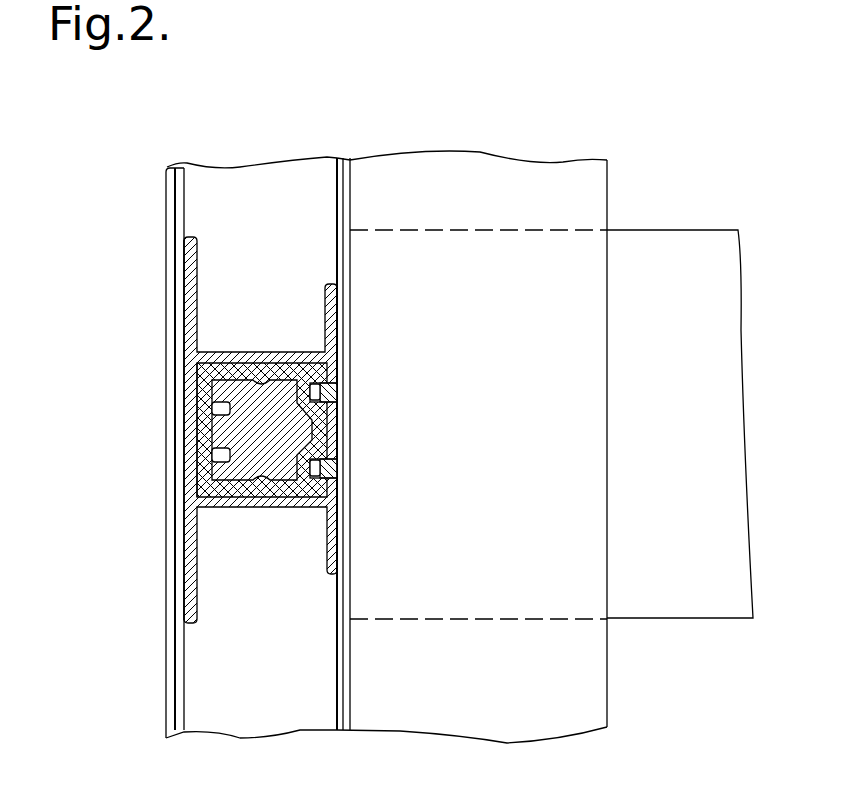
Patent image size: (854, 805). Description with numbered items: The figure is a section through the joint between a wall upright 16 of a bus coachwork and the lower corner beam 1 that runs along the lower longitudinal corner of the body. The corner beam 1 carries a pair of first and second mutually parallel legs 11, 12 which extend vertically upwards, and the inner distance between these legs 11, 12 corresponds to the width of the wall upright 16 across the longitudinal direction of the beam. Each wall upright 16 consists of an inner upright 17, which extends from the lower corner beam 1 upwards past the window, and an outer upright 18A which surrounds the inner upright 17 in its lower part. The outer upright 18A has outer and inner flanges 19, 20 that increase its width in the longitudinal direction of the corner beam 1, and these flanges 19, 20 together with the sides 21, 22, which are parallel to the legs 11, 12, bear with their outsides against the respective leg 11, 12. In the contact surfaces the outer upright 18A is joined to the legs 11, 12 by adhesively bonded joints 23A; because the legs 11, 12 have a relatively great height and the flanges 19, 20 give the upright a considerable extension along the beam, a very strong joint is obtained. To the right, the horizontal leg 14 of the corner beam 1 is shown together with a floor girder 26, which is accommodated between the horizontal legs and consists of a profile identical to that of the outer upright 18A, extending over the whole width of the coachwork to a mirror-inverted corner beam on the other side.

The lower corner beam 1 is at (369, 150).
The first leg 11 is at (166, 183).
The second leg 12 is at (350, 207).
The fourth leg 14 is at (583, 665).
The wall upright 16 is at (264, 425).
The inner upright 17 is at (244, 490).
The outer upright 18A is at (267, 482).
The outer flange 19 is at (193, 257).
The inner flange 20 is at (326, 294).
The side 21 is at (192, 430).
The side 22 is at (327, 388).
The adhesively bonded joint 23A is at (184, 285).
The floor girder 26 is at (693, 235).